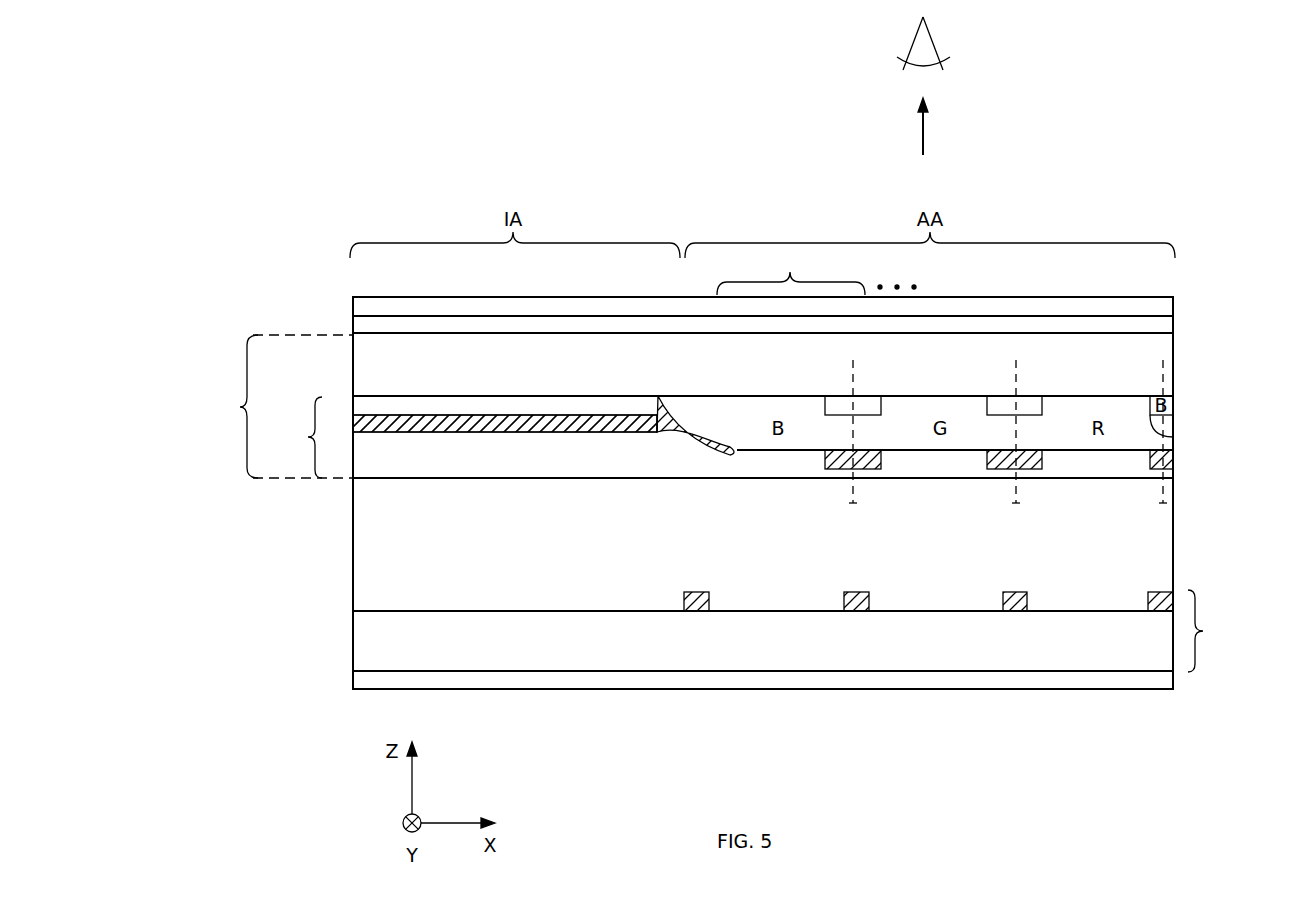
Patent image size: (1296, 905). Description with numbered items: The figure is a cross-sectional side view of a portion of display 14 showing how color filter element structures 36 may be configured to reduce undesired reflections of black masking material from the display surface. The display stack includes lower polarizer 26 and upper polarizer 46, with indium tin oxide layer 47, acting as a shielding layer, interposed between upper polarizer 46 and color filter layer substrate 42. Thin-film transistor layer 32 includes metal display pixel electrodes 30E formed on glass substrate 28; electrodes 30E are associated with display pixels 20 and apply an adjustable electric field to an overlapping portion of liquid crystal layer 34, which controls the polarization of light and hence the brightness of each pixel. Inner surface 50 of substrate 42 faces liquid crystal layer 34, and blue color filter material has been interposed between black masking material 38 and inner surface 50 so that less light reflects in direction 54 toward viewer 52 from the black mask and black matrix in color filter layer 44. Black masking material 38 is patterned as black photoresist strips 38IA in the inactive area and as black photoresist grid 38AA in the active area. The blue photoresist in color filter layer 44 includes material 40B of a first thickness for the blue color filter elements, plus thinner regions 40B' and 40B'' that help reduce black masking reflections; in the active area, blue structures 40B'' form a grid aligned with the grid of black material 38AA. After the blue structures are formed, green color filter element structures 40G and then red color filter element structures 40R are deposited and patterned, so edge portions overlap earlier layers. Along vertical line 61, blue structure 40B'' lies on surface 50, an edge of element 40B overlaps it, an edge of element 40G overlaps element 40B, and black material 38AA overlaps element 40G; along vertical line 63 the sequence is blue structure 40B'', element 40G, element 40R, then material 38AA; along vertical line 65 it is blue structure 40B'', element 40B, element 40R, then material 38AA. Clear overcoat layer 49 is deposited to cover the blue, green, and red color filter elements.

The display 14 is at (1138, 96).
The viewer 52 is at (935, 35).
The direction 54 is at (924, 127).
The display pixels 20 is at (791, 272).
The color filter layer substrate 42 is at (388, 350).
The upper polarizer 46 is at (1166, 307).
The indium tin oxide layer 47 is at (1166, 325).
The color filter layer 44 is at (232, 406).
The color filter element structures 36 is at (299, 437).
The black masking material 38 is at (348, 427).
The black photoresist strips 38IA is at (484, 426).
The black photoresist grid 38AA is at (988, 458).
The inner surface 50 is at (657, 395).
The thin blue color filter material region 40B' is at (505, 376).
The blue color filter element material 40B is at (992, 400).
The blue color structure 40B'' is at (1046, 381).
The green color filter element structures 40G is at (941, 405).
The red color filter element structures 40R is at (1110, 405).
The vertical line 61 is at (850, 504).
The vertical line 63 is at (1016, 504).
The vertical line 65 is at (1162, 503).
The clear overcoat layer 49 is at (1102, 468).
The liquid crystal layer 34 is at (1165, 543).
The metal display pixel electrodes 30E is at (855, 592).
The thin-film transistor layer 32 is at (1214, 631).
The lower polarizer 26 is at (780, 680).
The glass substrate 28 is at (1010, 655).